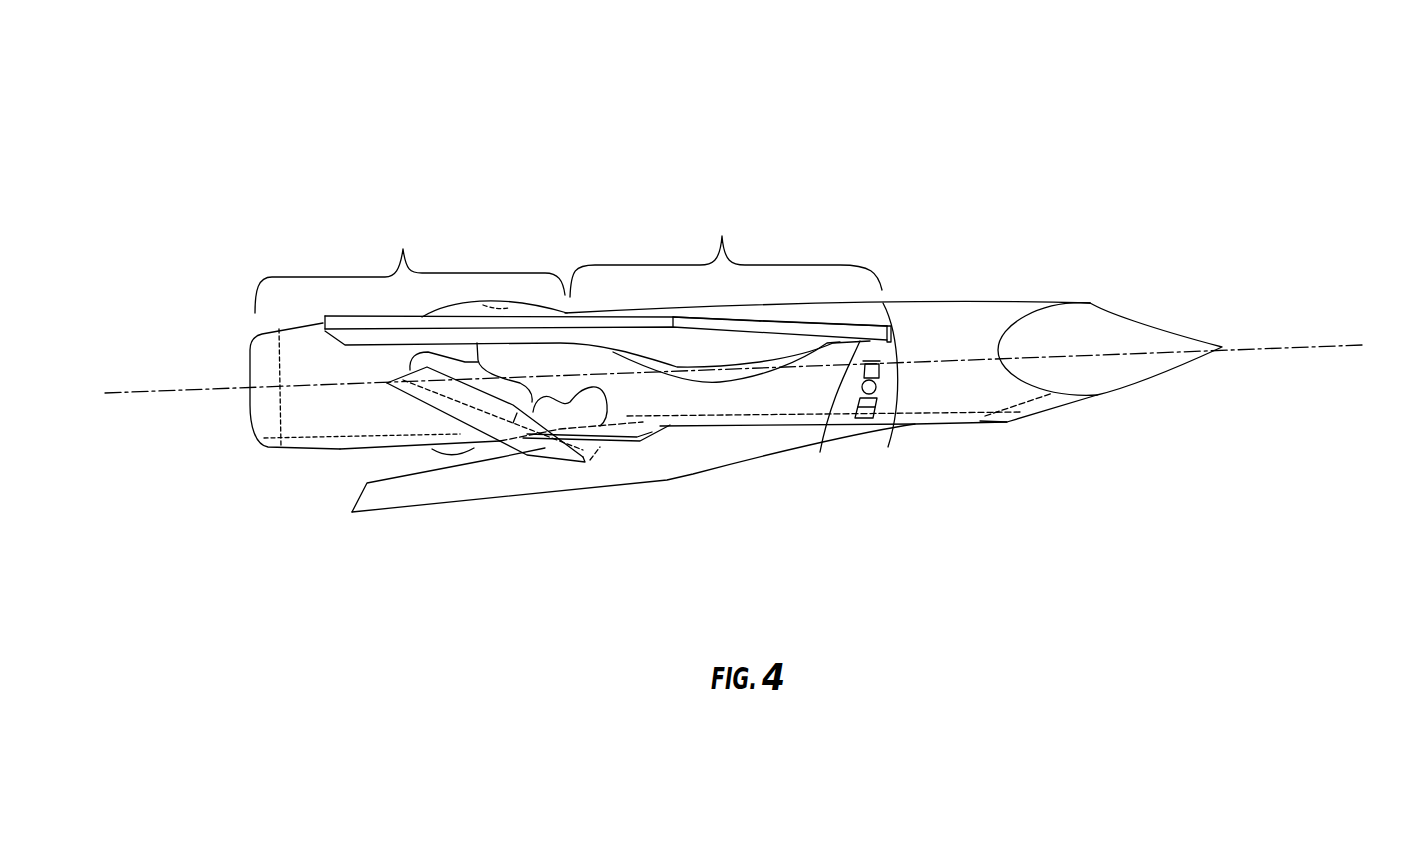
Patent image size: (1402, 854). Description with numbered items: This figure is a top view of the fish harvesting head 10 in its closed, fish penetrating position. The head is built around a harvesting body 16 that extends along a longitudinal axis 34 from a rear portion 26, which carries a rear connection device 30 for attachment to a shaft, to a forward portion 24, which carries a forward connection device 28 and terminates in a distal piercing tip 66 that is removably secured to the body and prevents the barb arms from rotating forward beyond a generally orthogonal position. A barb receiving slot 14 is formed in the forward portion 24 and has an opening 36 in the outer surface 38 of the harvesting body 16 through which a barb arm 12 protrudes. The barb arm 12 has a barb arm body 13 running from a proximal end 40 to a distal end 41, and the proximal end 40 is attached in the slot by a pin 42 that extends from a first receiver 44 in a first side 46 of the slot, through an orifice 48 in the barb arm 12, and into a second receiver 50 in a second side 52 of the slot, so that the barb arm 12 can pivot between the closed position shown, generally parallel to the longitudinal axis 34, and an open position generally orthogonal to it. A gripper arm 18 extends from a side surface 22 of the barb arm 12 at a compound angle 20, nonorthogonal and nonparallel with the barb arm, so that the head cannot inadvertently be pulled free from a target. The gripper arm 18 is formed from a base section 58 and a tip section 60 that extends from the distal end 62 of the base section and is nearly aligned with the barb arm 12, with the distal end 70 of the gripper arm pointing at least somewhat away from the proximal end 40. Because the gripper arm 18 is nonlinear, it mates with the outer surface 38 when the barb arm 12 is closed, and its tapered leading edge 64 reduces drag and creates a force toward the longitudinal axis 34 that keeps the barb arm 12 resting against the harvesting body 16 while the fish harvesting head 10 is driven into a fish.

The fish harvesting head 10 is at (968, 98).
The barb arm 12 is at (598, 322).
The barb arm body 13 is at (583, 315).
The barb receiving slot 14 is at (688, 370).
The harvesting body 16 is at (350, 408).
The gripper arm 18 is at (493, 470).
The compound angle 20 is at (446, 445).
The side surface 22 is at (618, 441).
The forward portion 24 is at (726, 262).
The rear portion 26 is at (410, 264).
The forward connection device 28 is at (876, 392).
The rear connection device 30 is at (248, 405).
The longitudinal axis 34 is at (1291, 344).
The opening 36 is at (773, 380).
The outer surface 38 is at (820, 402).
The proximal end 40 is at (884, 320).
The distal end 41 is at (350, 512).
The pin 42 is at (855, 420).
The first receiver 44 is at (902, 380).
The first side 46 is at (878, 386).
The orifice 48 is at (846, 378).
The second receiver 50 is at (863, 303).
The second side 52 is at (833, 315).
The base section 58 is at (583, 394).
The tip section 60 is at (477, 343).
The distal end 62 is at (493, 470).
The leading edge 64 is at (517, 375).
The distal piercing tip 66 is at (1158, 370).
The distal end 70 is at (410, 372).